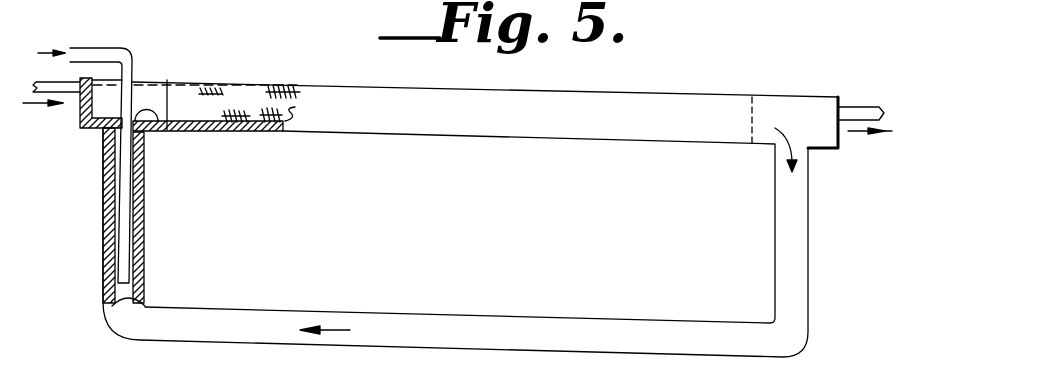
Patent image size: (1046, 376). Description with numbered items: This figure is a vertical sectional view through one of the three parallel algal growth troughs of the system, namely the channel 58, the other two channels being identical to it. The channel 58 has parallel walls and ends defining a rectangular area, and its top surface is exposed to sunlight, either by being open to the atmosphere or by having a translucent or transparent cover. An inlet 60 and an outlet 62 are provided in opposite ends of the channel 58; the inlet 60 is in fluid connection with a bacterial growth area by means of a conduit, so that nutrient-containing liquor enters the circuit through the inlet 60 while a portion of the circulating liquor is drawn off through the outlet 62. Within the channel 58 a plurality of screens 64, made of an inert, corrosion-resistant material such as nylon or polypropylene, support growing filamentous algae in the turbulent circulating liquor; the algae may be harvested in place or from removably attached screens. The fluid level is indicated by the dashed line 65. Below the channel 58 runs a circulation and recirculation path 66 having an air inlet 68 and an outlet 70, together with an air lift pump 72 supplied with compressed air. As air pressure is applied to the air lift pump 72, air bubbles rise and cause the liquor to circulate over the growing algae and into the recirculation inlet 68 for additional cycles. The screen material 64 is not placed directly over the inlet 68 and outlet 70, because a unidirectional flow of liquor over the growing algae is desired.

The channel 58 is at (430, 128).
The inlet 60 is at (42, 86).
The outlet 62 is at (887, 80).
The screens 64 is at (254, 86).
The fluid level 65 is at (186, 60).
The circulation and recirculation path 66 is at (588, 302).
The air inlet 68 is at (800, 146).
The outlet 70 is at (160, 128).
The air lift pump 72 is at (142, 261).